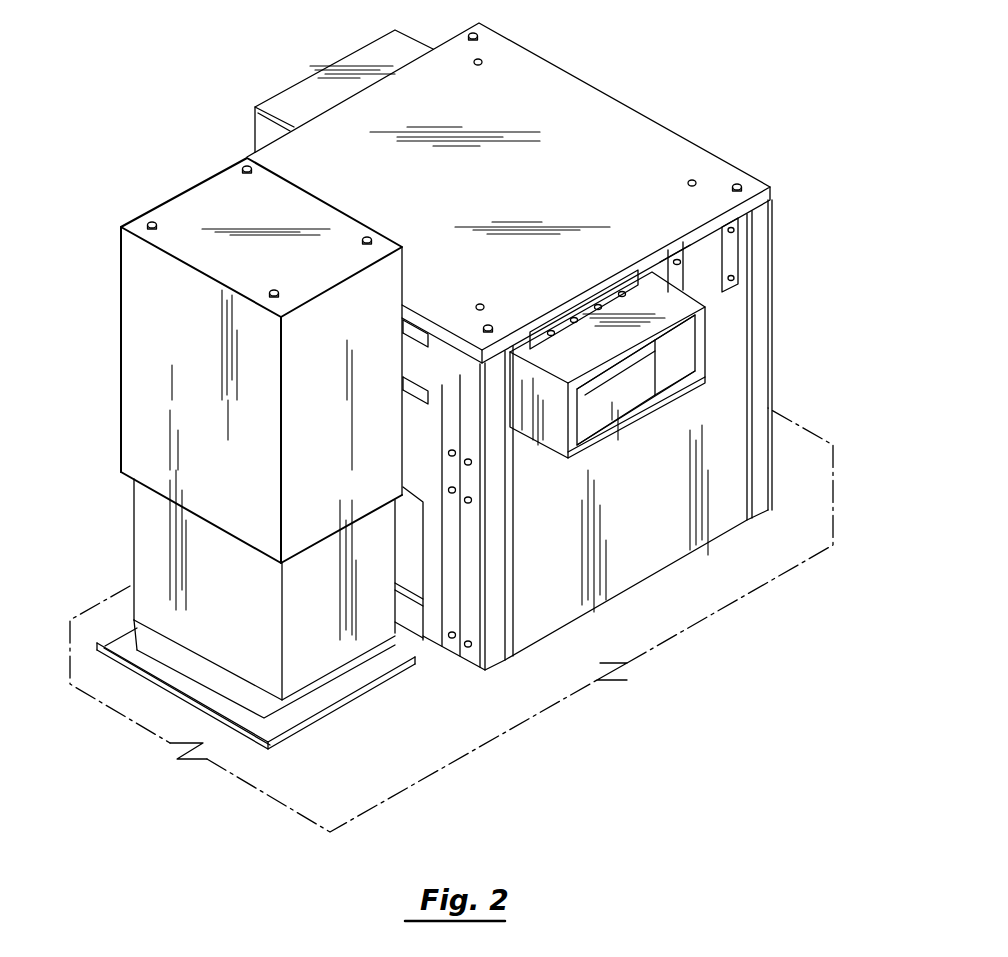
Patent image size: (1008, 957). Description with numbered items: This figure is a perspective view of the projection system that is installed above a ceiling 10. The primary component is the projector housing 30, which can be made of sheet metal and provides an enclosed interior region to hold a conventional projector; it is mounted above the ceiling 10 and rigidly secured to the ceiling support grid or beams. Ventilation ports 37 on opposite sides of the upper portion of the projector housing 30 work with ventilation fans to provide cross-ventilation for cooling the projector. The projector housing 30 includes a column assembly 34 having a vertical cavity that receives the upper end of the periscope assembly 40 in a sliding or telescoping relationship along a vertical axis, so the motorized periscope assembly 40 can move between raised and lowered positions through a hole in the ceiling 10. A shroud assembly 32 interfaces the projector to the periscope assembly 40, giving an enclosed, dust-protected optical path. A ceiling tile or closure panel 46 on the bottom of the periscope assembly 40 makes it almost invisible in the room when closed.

The ceiling 10 is at (652, 627).
The projector housing 30 is at (545, 97).
The shroud assembly 32 is at (407, 563).
The column assembly 34 is at (160, 333).
The ventilation ports 37 is at (350, 73).
The periscope assembly 40 is at (160, 533).
The closure panel 46 is at (117, 642).